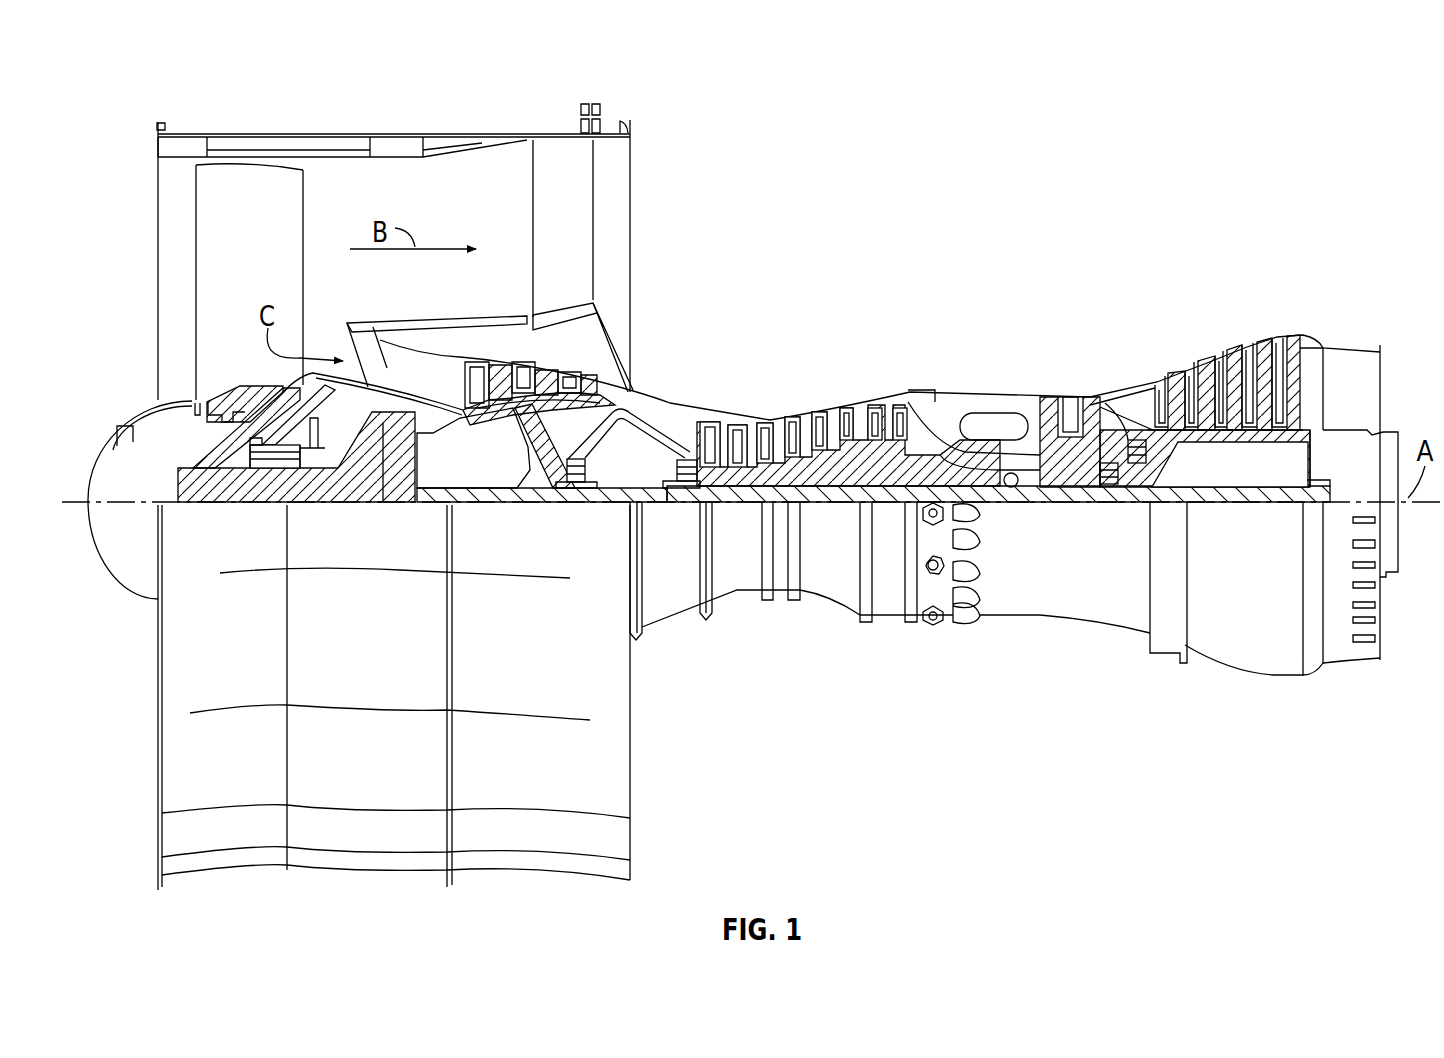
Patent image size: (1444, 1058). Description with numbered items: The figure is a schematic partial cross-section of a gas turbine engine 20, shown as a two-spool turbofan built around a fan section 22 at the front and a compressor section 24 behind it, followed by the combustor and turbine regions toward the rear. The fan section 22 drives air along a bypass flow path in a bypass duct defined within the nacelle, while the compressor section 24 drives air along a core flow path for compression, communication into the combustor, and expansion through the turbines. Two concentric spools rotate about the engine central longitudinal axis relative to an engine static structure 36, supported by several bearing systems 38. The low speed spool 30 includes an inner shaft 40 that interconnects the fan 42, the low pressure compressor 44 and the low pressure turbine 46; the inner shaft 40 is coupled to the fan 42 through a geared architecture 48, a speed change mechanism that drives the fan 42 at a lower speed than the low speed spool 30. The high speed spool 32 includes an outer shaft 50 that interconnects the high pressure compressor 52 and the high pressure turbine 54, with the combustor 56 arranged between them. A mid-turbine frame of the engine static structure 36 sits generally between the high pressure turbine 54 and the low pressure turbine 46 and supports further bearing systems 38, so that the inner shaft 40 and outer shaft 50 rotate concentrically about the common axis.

The gas turbine engine 20 is at (1188, 106).
The fan section 22 is at (158, 119).
The compressor section 24 is at (443, 290).
The low speed spool 30 is at (848, 505).
The high speed spool 32 is at (887, 462).
The engine static structure 36 is at (886, 620).
The bearing systems 38 is at (258, 470).
The inner shaft 40 is at (648, 500).
The fan 42 is at (225, 264).
The low pressure compressor 44 is at (545, 380).
The low pressure turbine 46 is at (1238, 357).
The geared architecture 48 is at (405, 478).
The outer shaft 50 is at (1005, 478).
The high pressure compressor 52 is at (812, 467).
The high pressure turbine 54 is at (1072, 396).
The combustor 56 is at (993, 422).